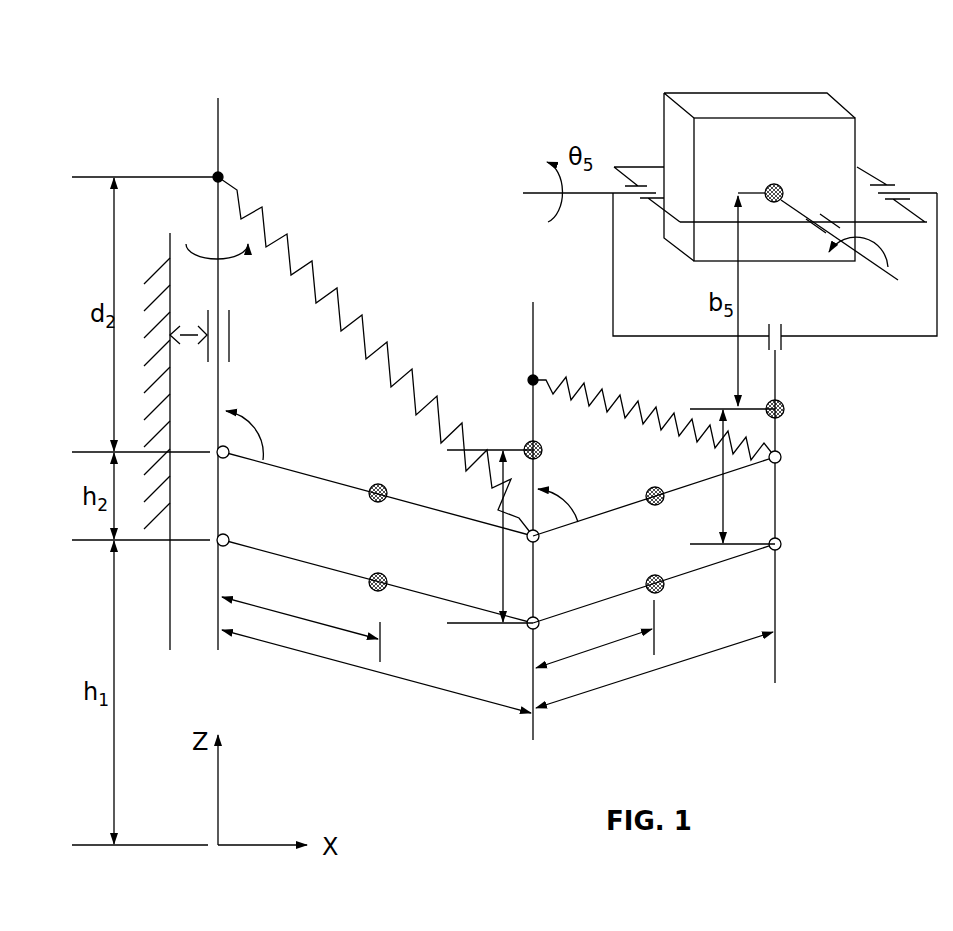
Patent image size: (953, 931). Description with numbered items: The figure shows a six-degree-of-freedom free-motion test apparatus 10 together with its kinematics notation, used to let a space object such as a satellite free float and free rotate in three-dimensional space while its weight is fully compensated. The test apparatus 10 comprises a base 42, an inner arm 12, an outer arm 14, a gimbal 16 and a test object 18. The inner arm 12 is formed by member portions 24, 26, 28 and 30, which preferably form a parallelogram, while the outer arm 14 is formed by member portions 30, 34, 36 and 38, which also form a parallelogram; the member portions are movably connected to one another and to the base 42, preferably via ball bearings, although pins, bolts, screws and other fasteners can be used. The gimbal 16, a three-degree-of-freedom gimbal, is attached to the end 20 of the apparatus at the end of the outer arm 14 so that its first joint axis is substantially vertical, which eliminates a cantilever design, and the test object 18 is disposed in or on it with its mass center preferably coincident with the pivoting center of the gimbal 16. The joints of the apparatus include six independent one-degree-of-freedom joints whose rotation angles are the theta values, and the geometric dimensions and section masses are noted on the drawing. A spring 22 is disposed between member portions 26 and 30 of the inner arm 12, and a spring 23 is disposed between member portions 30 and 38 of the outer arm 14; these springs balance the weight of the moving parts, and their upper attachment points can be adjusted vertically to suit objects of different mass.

The test apparatus 10 is at (112, 110).
The inner arm 12 is at (375, 555).
The outer arm 14 is at (687, 529).
The gimbal 16 is at (890, 183).
The test object 18 is at (857, 152).
The end 20 is at (793, 180).
The spring 22 is at (342, 328).
The spring 23 is at (565, 398).
The member portion 24 is at (350, 486).
The member portion 26 is at (222, 385).
The member portion 28 is at (303, 561).
The member portion 30 is at (535, 566).
The member portion 34 is at (672, 489).
The member portion 36 is at (720, 563).
The member portion 38 is at (778, 503).
The base 42 is at (170, 612).